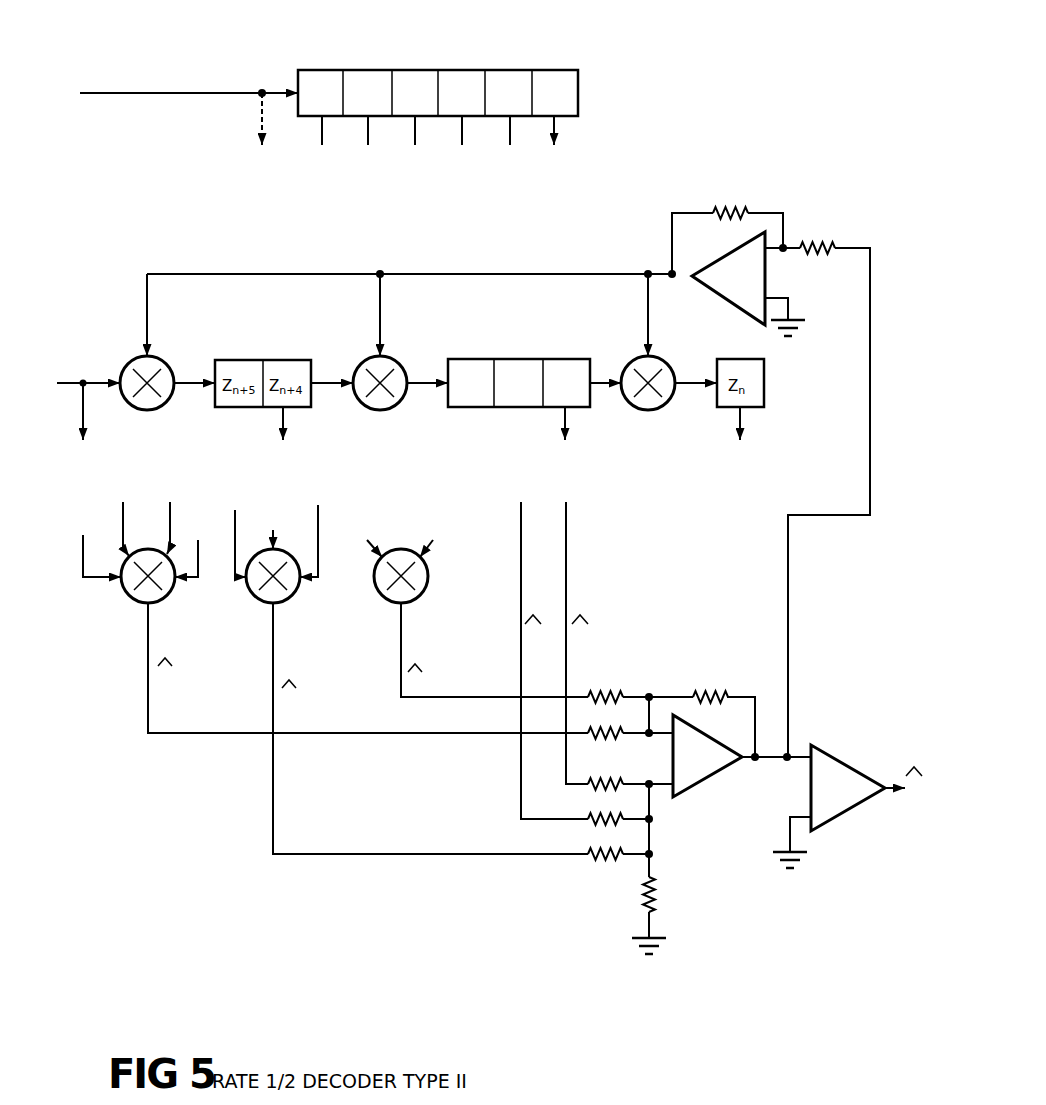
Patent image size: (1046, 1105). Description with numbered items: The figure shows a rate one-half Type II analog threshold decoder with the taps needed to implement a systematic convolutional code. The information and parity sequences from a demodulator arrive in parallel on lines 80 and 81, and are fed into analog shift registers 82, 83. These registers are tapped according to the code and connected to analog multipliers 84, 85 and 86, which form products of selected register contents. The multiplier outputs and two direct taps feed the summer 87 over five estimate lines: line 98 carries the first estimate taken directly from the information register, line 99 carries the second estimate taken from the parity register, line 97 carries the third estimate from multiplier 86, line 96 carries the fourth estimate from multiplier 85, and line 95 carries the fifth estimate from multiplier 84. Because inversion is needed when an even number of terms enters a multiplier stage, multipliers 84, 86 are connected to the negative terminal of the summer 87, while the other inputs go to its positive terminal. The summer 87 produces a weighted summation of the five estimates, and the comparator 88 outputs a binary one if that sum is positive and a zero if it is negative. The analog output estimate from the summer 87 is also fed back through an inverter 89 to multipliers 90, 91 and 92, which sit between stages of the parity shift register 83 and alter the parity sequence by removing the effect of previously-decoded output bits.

The information sequence input line 80 is at (167, 99).
The parity sequence input line 81 is at (76, 382).
The analog shift register 82 is at (508, 120).
The analog shift register 83 is at (475, 418).
The analog multiplier 84 is at (152, 604).
The analog multiplier 85 is at (277, 604).
The analog multiplier 86 is at (405, 604).
The summer 87 is at (705, 784).
The comparator 88 is at (836, 824).
The inverter 89 is at (735, 300).
The multiplier 90 is at (162, 404).
The multiplier 91 is at (362, 404).
The multiplier 92 is at (638, 409).
The estimate line 95 is at (182, 732).
The estimate line 96 is at (274, 836).
The estimate line 97 is at (483, 696).
The estimate line 98 is at (519, 720).
The estimate line 99 is at (565, 730).